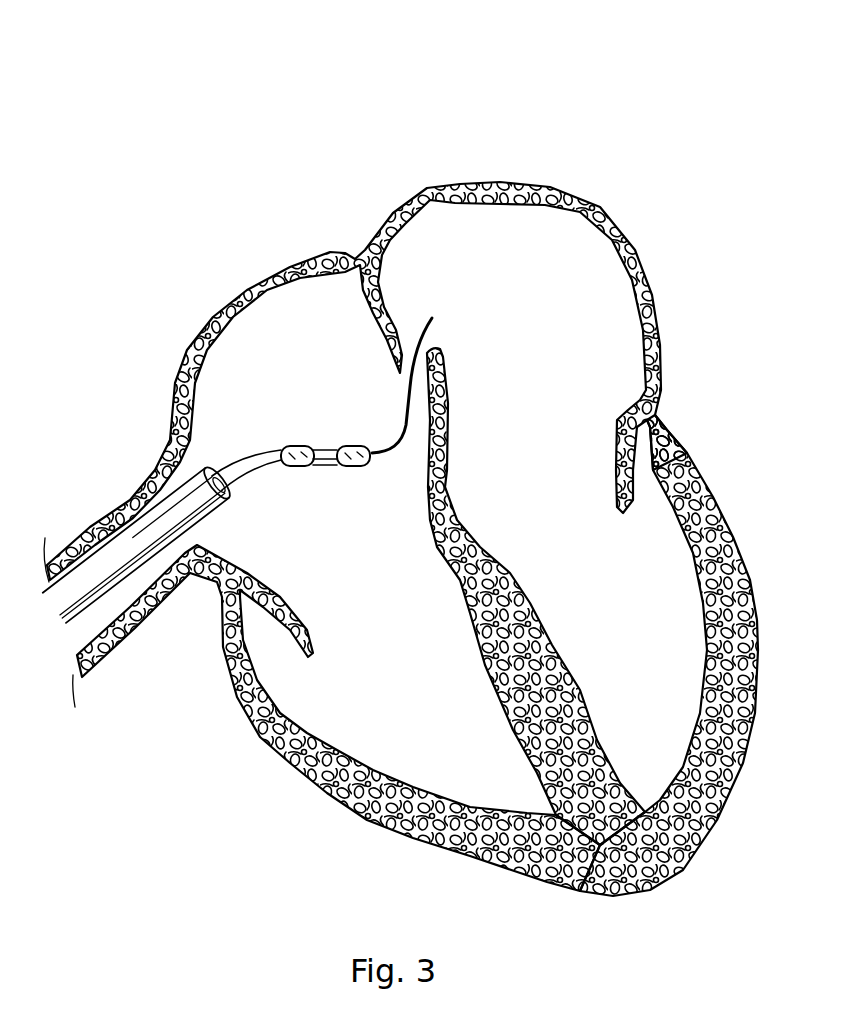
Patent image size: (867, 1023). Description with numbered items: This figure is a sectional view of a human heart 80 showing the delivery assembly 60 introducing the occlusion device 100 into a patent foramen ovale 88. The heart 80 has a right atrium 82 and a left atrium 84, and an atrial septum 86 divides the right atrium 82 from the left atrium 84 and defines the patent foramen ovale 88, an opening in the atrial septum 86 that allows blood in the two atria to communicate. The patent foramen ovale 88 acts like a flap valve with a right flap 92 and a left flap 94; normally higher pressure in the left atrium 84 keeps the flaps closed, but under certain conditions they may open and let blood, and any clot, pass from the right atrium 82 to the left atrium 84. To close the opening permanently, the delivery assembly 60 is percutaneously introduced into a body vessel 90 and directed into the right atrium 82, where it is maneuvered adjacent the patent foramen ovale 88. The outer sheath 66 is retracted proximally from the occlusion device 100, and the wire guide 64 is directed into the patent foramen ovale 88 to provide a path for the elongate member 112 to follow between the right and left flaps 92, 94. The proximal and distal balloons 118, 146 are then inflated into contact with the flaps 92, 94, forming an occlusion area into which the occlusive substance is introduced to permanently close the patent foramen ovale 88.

The human heart 80 is at (700, 86).
The right atrium 82 is at (368, 591).
The left atrium 84 is at (588, 311).
The atrial septum 86 is at (470, 643).
The patent foramen ovale 88 is at (416, 298).
The body vessel 90 is at (128, 640).
The right flap 92 is at (393, 317).
The left flap 94 is at (447, 373).
The occlusion device 100 is at (300, 410).
The delivery assembly 60 is at (176, 466).
The outer sheath 66 is at (147, 553).
The wire guide 64 is at (405, 427).
The elongate member 112 is at (238, 458).
The proximal balloon 118 is at (295, 447).
The distal balloon 146 is at (352, 447).